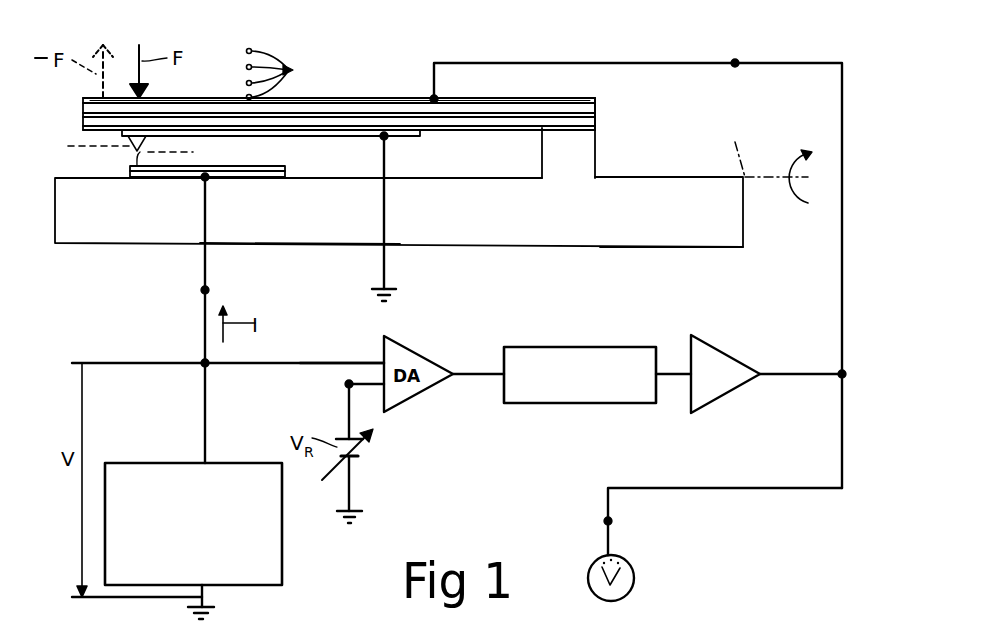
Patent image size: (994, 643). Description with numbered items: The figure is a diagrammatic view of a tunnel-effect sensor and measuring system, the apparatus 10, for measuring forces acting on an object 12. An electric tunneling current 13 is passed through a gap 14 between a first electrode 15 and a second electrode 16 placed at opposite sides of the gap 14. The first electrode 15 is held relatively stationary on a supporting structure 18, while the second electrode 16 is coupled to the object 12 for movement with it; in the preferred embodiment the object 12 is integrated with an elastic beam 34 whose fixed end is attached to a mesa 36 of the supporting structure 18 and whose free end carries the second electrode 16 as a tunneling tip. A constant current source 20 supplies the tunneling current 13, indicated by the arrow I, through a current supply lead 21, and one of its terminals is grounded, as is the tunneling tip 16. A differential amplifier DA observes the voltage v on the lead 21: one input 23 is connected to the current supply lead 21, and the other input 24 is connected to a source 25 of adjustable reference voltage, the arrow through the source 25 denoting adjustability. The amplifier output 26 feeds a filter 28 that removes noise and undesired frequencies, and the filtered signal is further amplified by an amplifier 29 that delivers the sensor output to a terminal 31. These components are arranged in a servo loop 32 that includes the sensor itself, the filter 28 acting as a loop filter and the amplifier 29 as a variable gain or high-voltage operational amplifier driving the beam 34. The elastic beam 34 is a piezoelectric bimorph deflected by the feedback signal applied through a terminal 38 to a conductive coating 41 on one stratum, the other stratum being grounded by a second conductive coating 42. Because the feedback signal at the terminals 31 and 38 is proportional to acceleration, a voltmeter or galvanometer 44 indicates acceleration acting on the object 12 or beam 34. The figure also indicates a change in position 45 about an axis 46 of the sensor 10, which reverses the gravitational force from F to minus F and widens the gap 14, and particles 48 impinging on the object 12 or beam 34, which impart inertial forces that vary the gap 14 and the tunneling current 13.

The apparatus 10 is at (248, 287).
The object 12 is at (80, 115).
The tunneling current 13 is at (148, 153).
The gap 14 is at (118, 156).
The first electrode 15 is at (286, 166).
The second electrode 16 is at (130, 147).
The supporting structure 18 is at (87, 202).
The constant current source 20 is at (282, 558).
The current supply lead 21 is at (205, 334).
The input 23 is at (349, 362).
The other input 24 is at (348, 383).
The source of reference voltage 25 is at (368, 448).
The output 26 is at (473, 372).
The filter 28 is at (549, 403).
The amplifier 29 is at (737, 390).
The terminal 31 is at (609, 521).
The servo loop 32 is at (729, 289).
The elastic beam 34 is at (596, 112).
The mesa 36 is at (595, 157).
The terminal 38 is at (736, 64).
The electrically conductive coating 41 is at (486, 98).
The second electrically conductive coating 42 is at (483, 129).
The voltmeter or galvanometer 44 is at (634, 582).
The change in position 45 is at (793, 203).
The axis 46 is at (771, 150).
The particles 48 is at (284, 74).